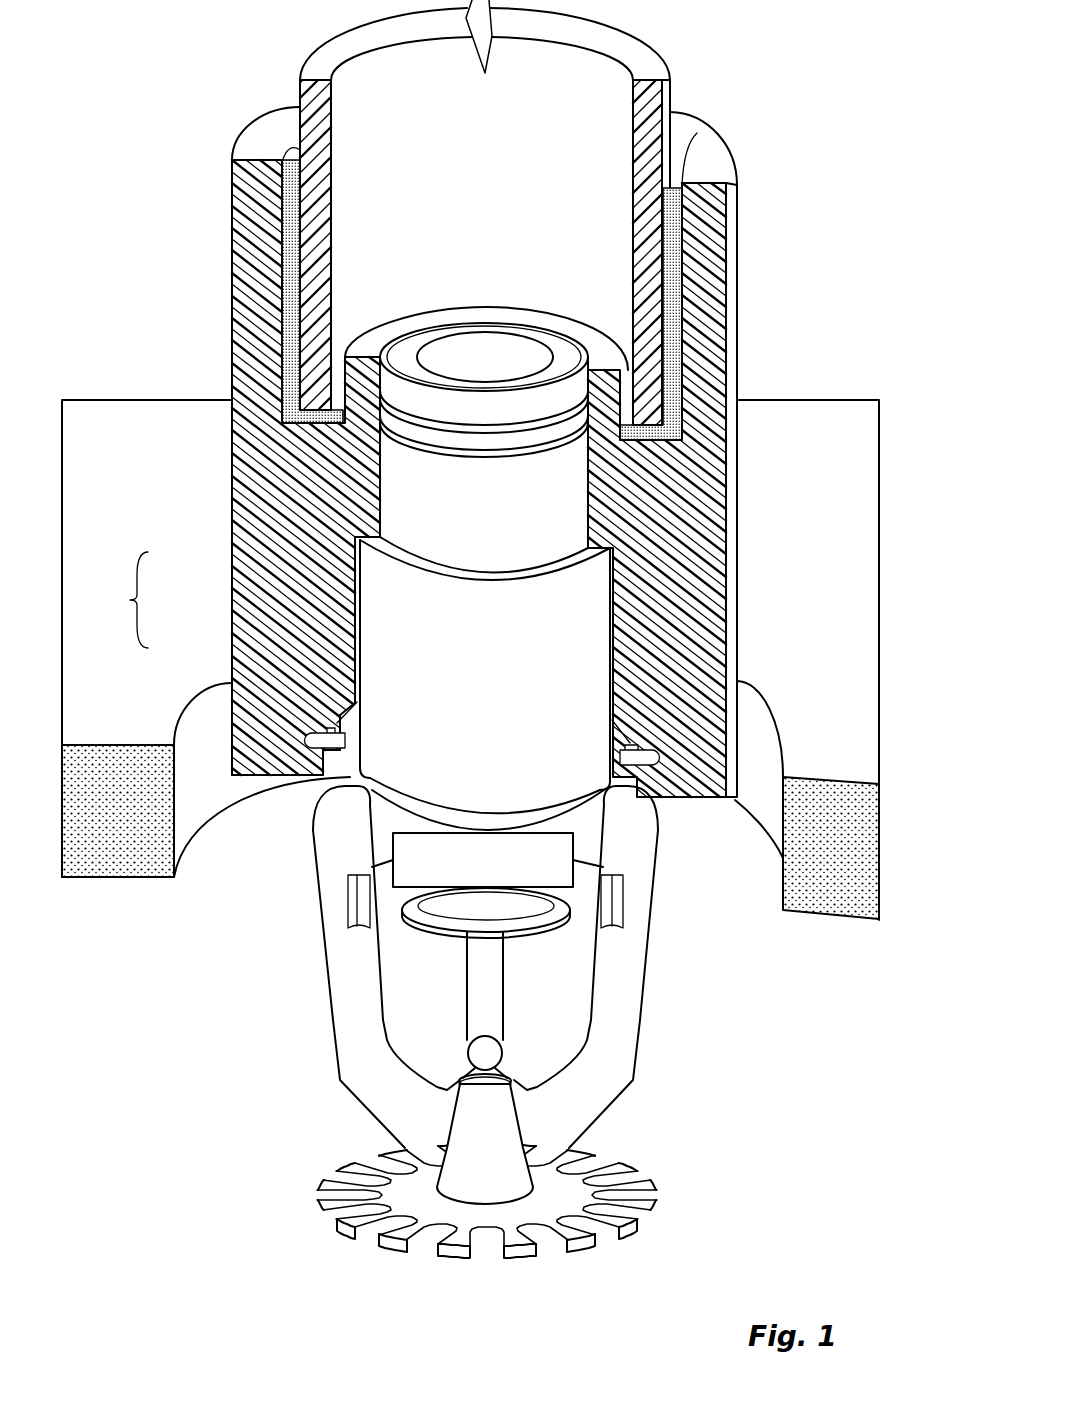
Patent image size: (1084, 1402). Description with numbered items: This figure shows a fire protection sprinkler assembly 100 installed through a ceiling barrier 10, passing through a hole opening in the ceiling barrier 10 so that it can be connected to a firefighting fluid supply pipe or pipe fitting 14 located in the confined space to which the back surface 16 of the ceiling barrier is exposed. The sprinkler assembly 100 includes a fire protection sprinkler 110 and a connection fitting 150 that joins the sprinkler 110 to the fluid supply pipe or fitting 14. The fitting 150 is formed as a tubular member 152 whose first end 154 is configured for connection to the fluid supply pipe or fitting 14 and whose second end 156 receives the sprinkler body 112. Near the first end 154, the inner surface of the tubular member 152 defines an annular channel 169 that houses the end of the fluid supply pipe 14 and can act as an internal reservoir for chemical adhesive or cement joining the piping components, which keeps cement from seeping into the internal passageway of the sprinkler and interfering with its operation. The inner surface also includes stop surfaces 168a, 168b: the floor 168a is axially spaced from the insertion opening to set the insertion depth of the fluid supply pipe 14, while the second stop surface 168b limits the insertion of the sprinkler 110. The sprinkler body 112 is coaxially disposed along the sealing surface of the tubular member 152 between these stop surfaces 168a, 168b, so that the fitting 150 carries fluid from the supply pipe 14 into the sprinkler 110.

The ceiling barrier 10 is at (871, 854).
The fluid supply pipe or pipe fitting 14 is at (670, 120).
The back surface of the ceiling barrier 16 is at (842, 410).
The sprinkler assembly 100 is at (124, 600).
The fire protection sprinkler 110 is at (370, 657).
The sprinkler body 112 is at (575, 495).
The connection fitting 150 is at (324, 568).
The tubular member 152 is at (285, 518).
The first end 154 is at (240, 232).
The second end 156 is at (249, 747).
The floor 168a is at (605, 458).
The second stop surface 168b is at (600, 528).
The annular channel 169 is at (290, 385).